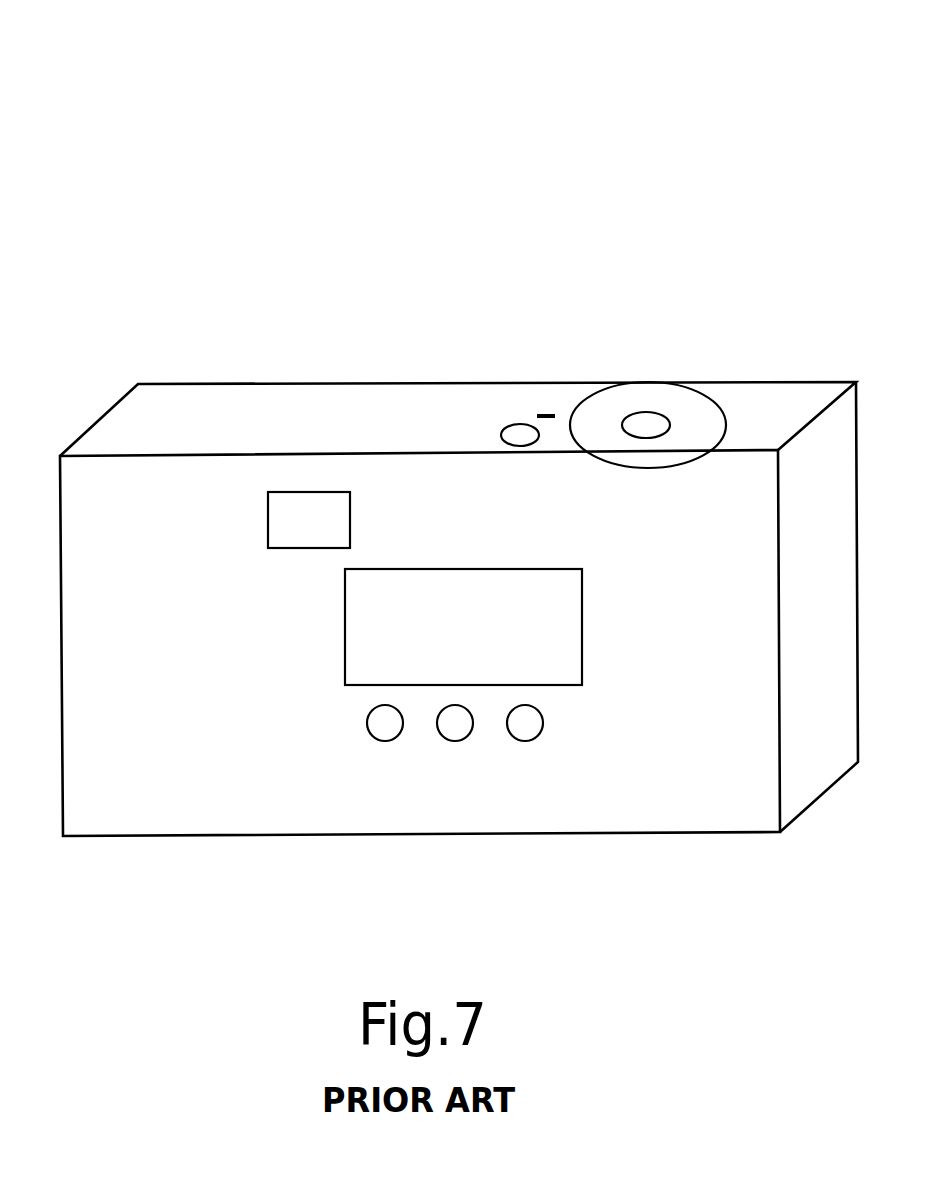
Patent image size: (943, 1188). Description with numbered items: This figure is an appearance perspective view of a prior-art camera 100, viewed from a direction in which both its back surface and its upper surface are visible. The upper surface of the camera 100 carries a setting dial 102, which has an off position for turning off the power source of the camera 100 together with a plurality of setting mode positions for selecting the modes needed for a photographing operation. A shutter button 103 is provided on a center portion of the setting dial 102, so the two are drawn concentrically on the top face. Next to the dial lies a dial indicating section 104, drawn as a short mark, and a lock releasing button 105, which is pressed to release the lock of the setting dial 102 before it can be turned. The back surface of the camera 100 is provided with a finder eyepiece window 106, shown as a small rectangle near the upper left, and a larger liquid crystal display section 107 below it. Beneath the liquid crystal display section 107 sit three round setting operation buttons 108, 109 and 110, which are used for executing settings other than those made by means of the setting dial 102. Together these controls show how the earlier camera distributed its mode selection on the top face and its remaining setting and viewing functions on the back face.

The camera 100 is at (375, 147).
The setting dial 102 is at (695, 415).
The shutter button 103 is at (647, 422).
The dial indicating section 104 is at (548, 414).
The lock releasing button 105 is at (508, 431).
The finder eyepiece window 106 is at (277, 514).
The liquid crystal display section 107 is at (360, 632).
The setting operation button 108 is at (385, 733).
The setting operation button 109 is at (455, 733).
The setting operation button 110 is at (525, 733).